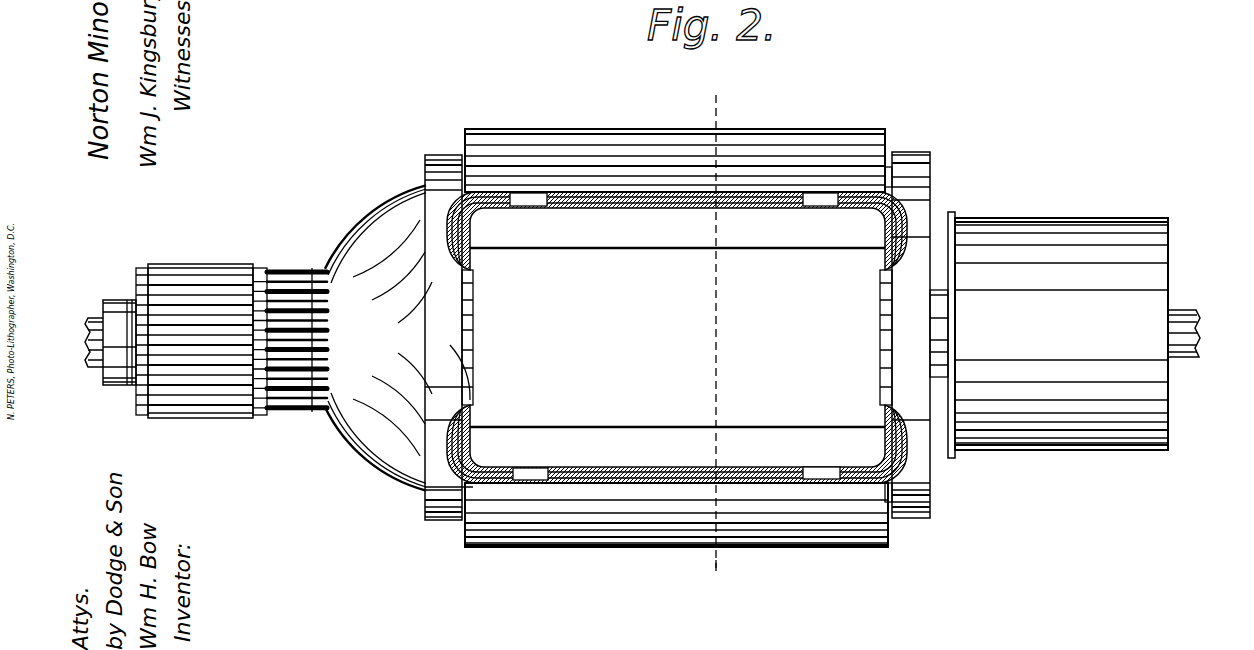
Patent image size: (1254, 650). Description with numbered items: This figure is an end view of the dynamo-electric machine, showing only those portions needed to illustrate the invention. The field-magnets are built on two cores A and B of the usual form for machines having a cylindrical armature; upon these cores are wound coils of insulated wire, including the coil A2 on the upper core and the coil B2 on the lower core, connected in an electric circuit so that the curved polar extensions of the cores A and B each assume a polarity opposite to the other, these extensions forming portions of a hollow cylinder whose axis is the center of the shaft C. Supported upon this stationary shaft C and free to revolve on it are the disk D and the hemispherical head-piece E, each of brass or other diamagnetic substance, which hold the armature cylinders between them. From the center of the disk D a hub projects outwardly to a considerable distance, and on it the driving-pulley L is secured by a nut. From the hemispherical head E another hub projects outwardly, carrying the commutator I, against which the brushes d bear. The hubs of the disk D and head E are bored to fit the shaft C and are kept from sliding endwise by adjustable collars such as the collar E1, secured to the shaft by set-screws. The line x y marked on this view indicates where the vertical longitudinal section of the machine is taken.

The field-magnet core A is at (675, 139).
The field-magnet core B is at (676, 539).
The coil of insulated wire A2 is at (907, 220).
The coil of insulated wire B2 is at (907, 458).
The shaft C is at (648, 333).
The disk D is at (695, 312).
The hemispherical head-piece E is at (397, 329).
The collar E1 is at (104, 320).
The commutator I is at (194, 323).
The driving-pulley L is at (1049, 335).
The brushes d is at (304, 348).
The section line x is at (714, 320).
The section line y is at (718, 581).